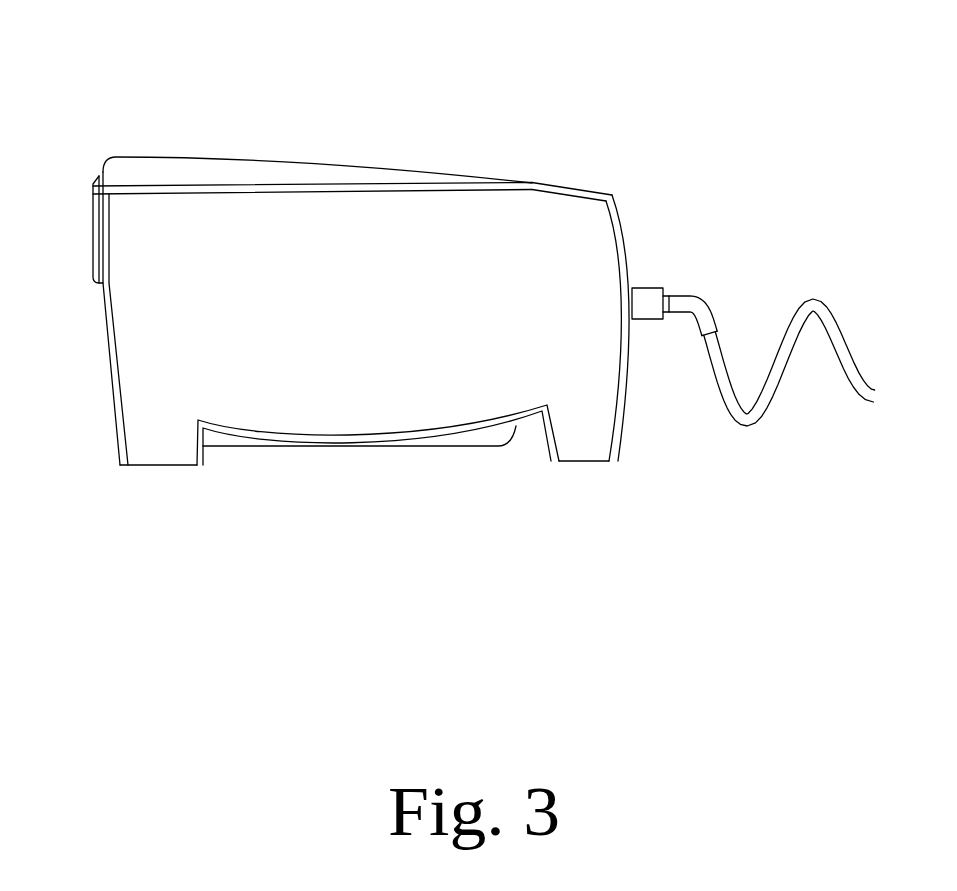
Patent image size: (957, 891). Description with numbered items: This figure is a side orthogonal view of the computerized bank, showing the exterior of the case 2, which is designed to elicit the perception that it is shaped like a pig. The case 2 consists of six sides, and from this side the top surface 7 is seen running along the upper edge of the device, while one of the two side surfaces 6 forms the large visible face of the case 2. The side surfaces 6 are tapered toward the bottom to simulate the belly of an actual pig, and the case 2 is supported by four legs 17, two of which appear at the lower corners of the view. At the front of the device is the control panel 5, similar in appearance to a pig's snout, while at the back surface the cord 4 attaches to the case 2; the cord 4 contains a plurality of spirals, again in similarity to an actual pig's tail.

The case 2 is at (613, 195).
The cord 4 is at (800, 303).
The control panel 5 is at (92, 193).
The side surfaces 6 is at (148, 373).
The top surface 7 is at (323, 173).
The legs 17 is at (157, 448).